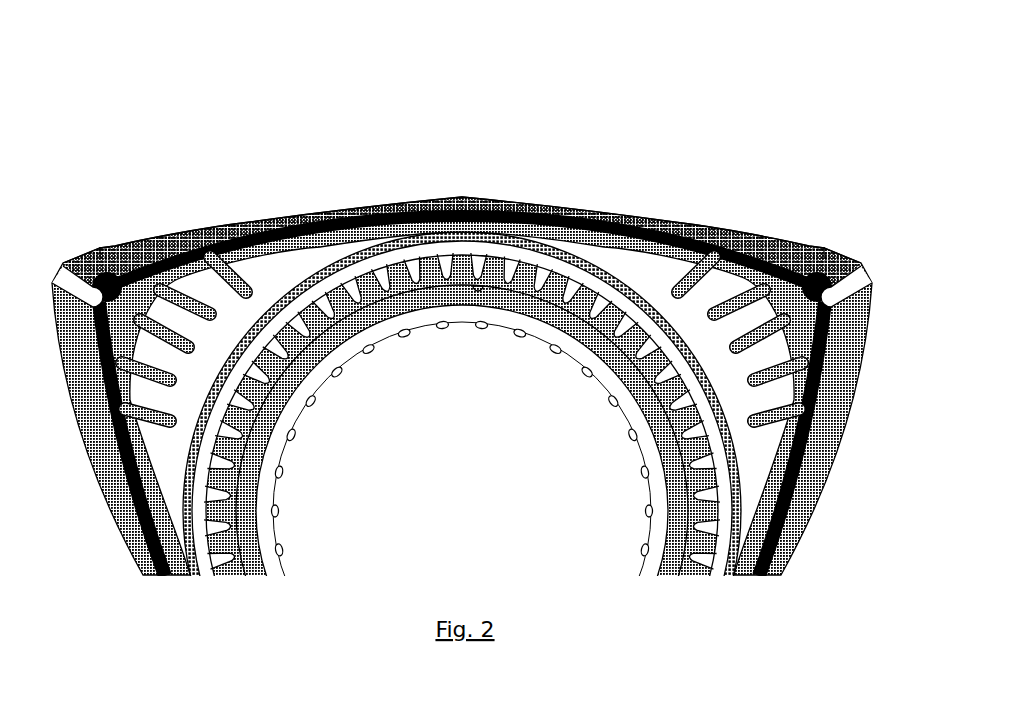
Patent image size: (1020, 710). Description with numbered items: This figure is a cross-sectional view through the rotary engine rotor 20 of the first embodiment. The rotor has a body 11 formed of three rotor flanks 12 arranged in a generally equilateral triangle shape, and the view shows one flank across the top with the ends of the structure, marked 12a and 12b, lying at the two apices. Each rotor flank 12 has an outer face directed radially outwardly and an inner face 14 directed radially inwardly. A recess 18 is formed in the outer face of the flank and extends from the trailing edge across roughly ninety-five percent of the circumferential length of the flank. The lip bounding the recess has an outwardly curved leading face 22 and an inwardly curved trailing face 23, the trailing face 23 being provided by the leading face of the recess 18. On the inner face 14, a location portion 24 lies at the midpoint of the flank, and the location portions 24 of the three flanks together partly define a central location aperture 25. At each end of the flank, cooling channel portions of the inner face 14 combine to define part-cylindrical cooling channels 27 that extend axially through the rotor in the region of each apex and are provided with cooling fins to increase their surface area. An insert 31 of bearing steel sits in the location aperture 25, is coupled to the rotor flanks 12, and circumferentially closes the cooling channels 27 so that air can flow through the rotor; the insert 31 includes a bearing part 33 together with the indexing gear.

The rotary engine rotor 20 is at (526, 88).
The body 11 is at (757, 517).
The rotor flank 12 is at (665, 218).
The first ring end 12a is at (65, 252).
The second ring end 12b is at (864, 252).
The inner face 14 is at (186, 226).
The recess 18 is at (250, 223).
The leading face of the lip 22 is at (110, 247).
The trailing face of the lip 23 is at (133, 257).
The location portion 24 is at (700, 262).
The location aperture 25 is at (603, 505).
The cooling channel 27 is at (193, 375).
The insert 31 is at (250, 527).
The bearing part 33 is at (205, 563).